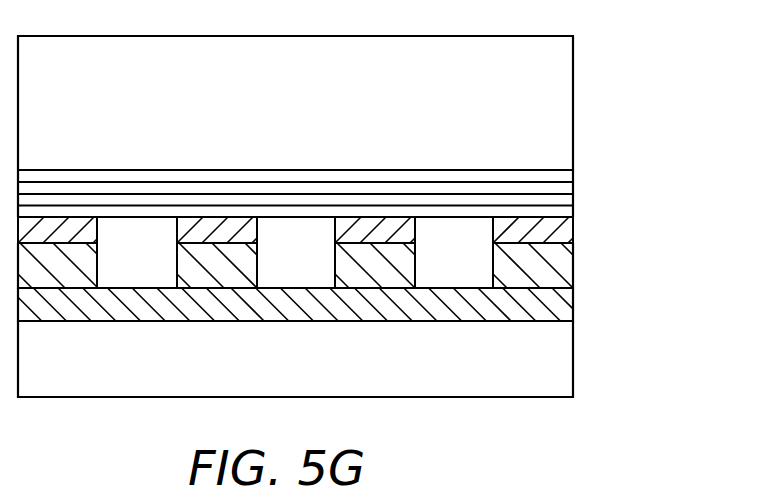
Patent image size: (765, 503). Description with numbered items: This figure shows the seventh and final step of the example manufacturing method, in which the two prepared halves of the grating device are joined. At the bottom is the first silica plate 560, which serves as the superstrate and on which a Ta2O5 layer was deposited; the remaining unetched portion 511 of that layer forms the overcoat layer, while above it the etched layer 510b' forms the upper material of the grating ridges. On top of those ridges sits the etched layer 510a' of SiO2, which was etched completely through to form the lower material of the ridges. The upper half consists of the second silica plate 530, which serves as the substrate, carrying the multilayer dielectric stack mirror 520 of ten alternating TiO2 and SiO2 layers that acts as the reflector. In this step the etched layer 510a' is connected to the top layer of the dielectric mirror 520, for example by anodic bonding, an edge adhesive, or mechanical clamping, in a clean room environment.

The second silica plate 530 is at (573, 55).
The multilayer dielectric stack mirror 520 is at (573, 180).
The etched layer 510a' is at (362, 243).
The etched layer 510b' is at (362, 260).
The remaining unetched portion 511 is at (573, 308).
The first silica plate 560 is at (573, 353).